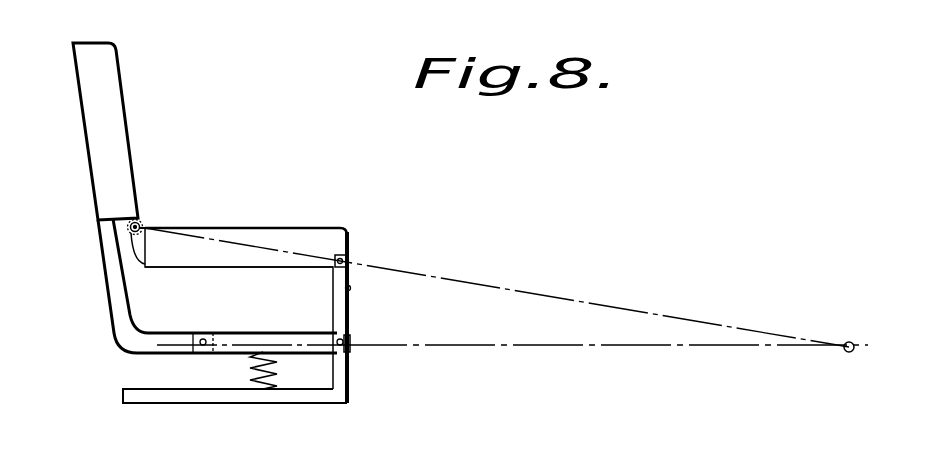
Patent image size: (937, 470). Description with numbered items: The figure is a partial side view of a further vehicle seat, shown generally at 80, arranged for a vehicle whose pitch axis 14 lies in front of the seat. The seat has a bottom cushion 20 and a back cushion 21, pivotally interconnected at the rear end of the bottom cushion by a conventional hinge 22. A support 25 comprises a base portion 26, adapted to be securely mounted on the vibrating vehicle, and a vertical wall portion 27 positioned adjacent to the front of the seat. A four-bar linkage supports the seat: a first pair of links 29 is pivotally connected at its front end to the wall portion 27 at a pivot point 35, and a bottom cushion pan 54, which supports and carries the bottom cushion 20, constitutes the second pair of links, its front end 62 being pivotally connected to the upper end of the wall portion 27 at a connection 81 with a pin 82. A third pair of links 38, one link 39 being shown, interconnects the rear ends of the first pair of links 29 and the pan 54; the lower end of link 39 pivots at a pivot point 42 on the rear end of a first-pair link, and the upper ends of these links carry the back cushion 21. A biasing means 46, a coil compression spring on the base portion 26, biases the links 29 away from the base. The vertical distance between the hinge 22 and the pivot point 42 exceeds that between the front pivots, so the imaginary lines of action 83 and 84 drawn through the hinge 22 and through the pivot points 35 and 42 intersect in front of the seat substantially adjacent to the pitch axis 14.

The seat assembly 80 is at (222, 174).
The back cushion 21 is at (102, 100).
The hinge 22 is at (141, 223).
The bottom cushion 20 is at (275, 240).
The bracket 81 is at (349, 257).
The pin 82 is at (352, 288).
The link axis line 83 is at (555, 298).
The frame axis line 84 is at (565, 346).
The pitch axis 14 is at (849, 341).
The third pair of links 38 is at (101, 276).
The link 39 is at (120, 322).
The bottom cushion pan 54 is at (205, 268).
The front end 62 is at (288, 268).
The pivot point 42 is at (206, 338).
The vertical wall portion 27 is at (349, 322).
The first pair of links 29 is at (233, 354).
The biasing means 46 is at (271, 373).
The pivot point 35 is at (346, 351).
The support 25 is at (192, 404).
The base portion 26 is at (235, 397).